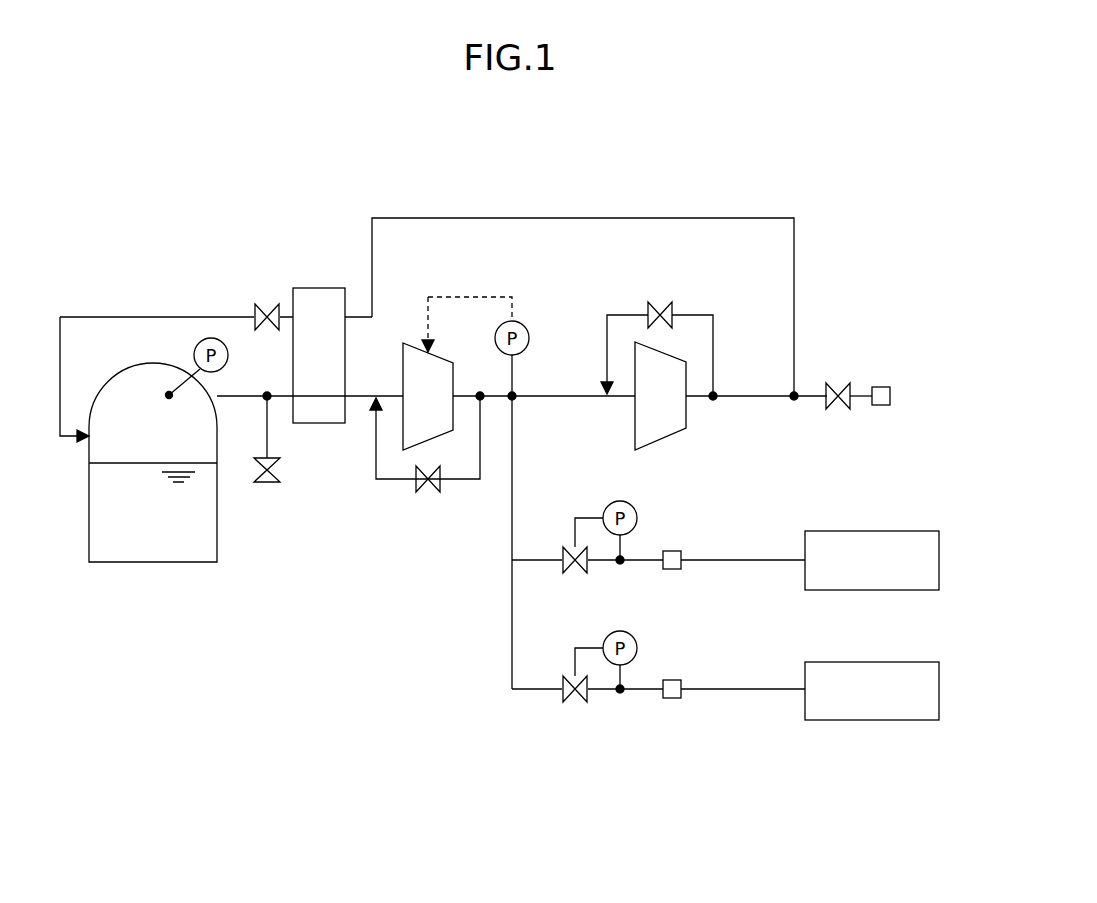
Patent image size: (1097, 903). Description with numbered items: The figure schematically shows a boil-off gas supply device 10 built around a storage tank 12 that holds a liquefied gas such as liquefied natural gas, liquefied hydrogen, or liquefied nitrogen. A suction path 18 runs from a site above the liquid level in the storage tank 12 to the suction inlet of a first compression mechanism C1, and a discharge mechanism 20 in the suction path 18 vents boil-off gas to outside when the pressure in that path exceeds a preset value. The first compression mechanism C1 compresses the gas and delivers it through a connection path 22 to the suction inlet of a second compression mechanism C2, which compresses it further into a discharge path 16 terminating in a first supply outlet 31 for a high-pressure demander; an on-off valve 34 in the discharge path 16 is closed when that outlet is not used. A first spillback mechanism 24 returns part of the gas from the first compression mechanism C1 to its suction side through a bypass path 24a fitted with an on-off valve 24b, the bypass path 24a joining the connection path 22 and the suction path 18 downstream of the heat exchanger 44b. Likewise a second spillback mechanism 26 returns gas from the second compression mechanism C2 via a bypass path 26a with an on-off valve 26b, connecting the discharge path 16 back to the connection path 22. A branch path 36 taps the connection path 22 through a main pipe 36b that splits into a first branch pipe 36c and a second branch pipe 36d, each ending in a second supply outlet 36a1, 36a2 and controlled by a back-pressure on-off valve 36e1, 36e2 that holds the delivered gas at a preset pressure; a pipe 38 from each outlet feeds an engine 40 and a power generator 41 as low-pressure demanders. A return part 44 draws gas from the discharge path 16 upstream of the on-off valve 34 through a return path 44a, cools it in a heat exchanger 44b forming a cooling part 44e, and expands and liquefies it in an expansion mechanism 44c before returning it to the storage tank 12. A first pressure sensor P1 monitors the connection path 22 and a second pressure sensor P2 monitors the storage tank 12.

The boil-off gas supply device 10 is at (858, 214).
The storage tank 12 is at (217, 542).
The discharge path 16 is at (760, 400).
The suction path 18 is at (357, 402).
The discharge mechanism 20 is at (267, 486).
The connection path 22 is at (555, 400).
The first spillback mechanism 24 is at (427, 483).
The bypass path 24a is at (455, 483).
The on-off valve 24b is at (428, 493).
The second spillback mechanism 26 is at (692, 318).
The bypass path 26a is at (713, 345).
The on-off valve 26b is at (660, 302).
The first supply outlet 31 is at (886, 385).
The on-off valve 34 is at (838, 382).
The branch path 36 is at (609, 579).
The second supply outlet 36a1 is at (681, 551).
The second supply outlet 36a2 is at (681, 680).
The main pipe 36b is at (512, 483).
The first branch pipe 36c is at (545, 562).
The second branch pipe 36d is at (552, 692).
The on-off valve 36e1 is at (580, 572).
The on-off valve 36e2 is at (580, 701).
The pipe 38 is at (780, 565).
The engine 40 is at (870, 531).
The power generator 41 is at (870, 662).
The return part 44 is at (605, 214).
The return path 44a is at (445, 218).
The heat exchanger 44b is at (323, 288).
The expansion mechanism 44c is at (265, 304).
The cooling part 44e is at (347, 266).
The first compression mechanism C1 is at (403, 340).
The second compression mechanism C2 is at (640, 450).
The first pressure sensor P1 is at (527, 330).
The second pressure sensor P2 is at (211, 338).